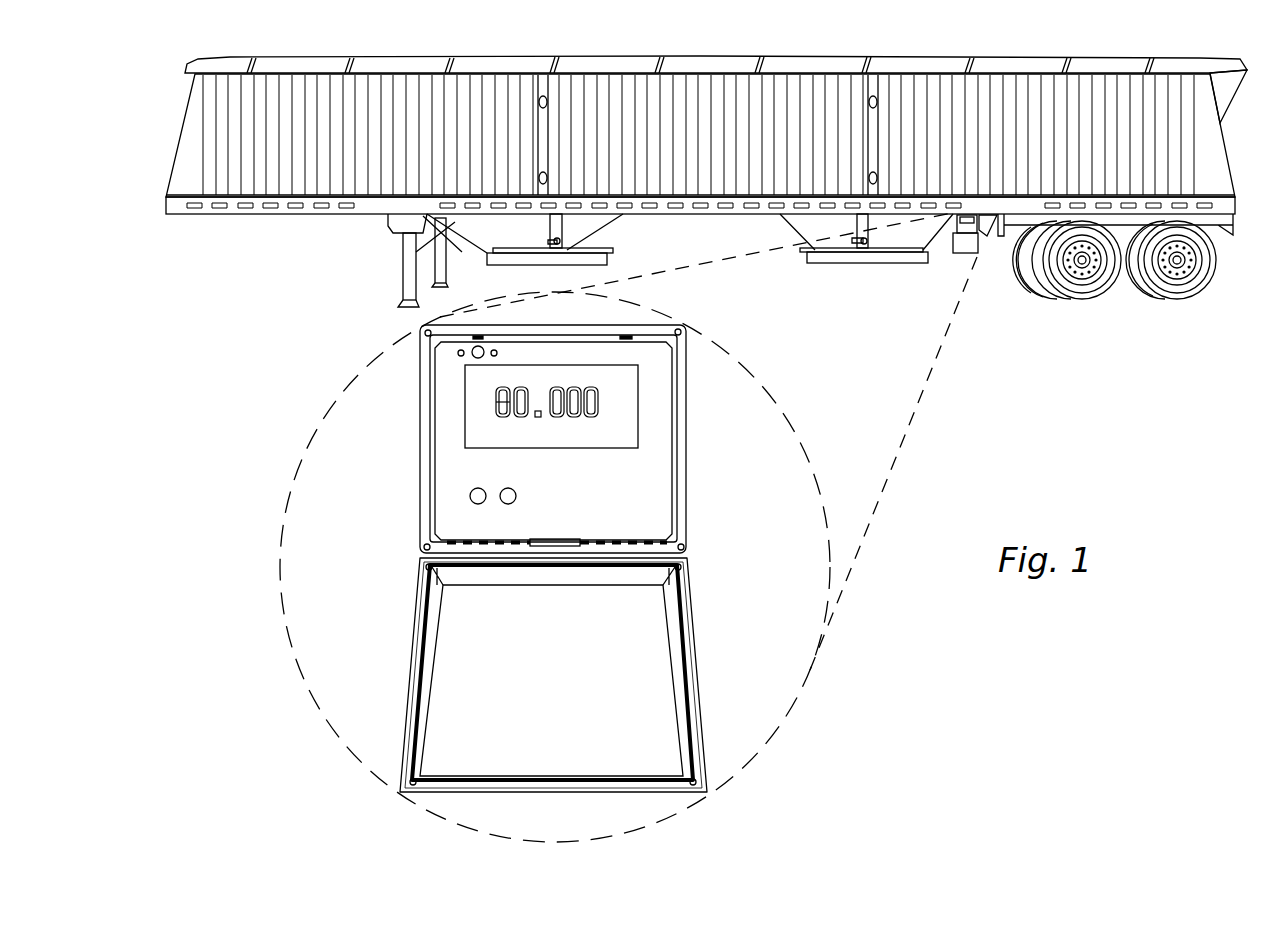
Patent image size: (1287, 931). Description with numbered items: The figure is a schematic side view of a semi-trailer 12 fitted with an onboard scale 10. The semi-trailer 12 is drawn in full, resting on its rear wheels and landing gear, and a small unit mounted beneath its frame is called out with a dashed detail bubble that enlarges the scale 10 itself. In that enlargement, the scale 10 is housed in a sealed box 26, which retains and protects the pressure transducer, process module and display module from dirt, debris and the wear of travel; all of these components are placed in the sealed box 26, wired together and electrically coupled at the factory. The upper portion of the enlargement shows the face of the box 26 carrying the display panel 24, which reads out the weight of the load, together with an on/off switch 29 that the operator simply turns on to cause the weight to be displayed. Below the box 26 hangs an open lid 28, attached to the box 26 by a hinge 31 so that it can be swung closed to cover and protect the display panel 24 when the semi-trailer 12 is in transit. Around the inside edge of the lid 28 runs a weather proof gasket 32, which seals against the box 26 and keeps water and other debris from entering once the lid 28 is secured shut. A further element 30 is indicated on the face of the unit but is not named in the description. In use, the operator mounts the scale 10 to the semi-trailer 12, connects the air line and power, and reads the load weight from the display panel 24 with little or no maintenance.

The scale 10 is at (706, 224).
The semi-trailer 12 is at (292, 218).
The display panel 24 is at (502, 412).
The sealed box 26 is at (558, 441).
The lid 28 is at (567, 675).
The on/off switch 29 is at (468, 496).
The face plate 30 is at (652, 487).
The hinge 31 is at (670, 540).
The weather proof gasket 32 is at (688, 697).